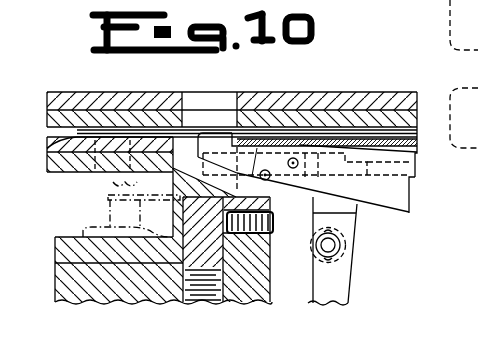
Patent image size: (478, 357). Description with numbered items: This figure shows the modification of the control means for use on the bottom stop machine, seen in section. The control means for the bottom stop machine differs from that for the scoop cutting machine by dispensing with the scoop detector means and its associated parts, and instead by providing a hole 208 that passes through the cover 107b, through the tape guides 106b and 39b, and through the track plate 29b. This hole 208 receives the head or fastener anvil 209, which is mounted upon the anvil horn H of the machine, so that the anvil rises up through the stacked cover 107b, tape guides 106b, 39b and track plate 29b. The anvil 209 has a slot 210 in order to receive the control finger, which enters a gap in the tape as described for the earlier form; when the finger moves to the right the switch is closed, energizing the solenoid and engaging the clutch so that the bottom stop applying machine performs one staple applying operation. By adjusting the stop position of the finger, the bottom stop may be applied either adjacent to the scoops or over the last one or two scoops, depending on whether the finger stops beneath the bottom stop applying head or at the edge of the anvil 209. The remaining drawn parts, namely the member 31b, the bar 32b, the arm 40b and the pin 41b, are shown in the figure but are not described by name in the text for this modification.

The hole 208 is at (181, 112).
The slot 210 is at (190, 155).
The latch member 31b is at (210, 133).
The tape guide 106b is at (326, 115).
The cover 107b is at (388, 100).
The tape guide 39b is at (418, 150).
The slide bar 32b is at (409, 197).
The pivot pin 41b is at (340, 245).
The lever arm 40b is at (342, 283).
The track plate 29b is at (78, 172).
The fastener anvil 209 is at (189, 182).
The anvil horn H is at (262, 267).